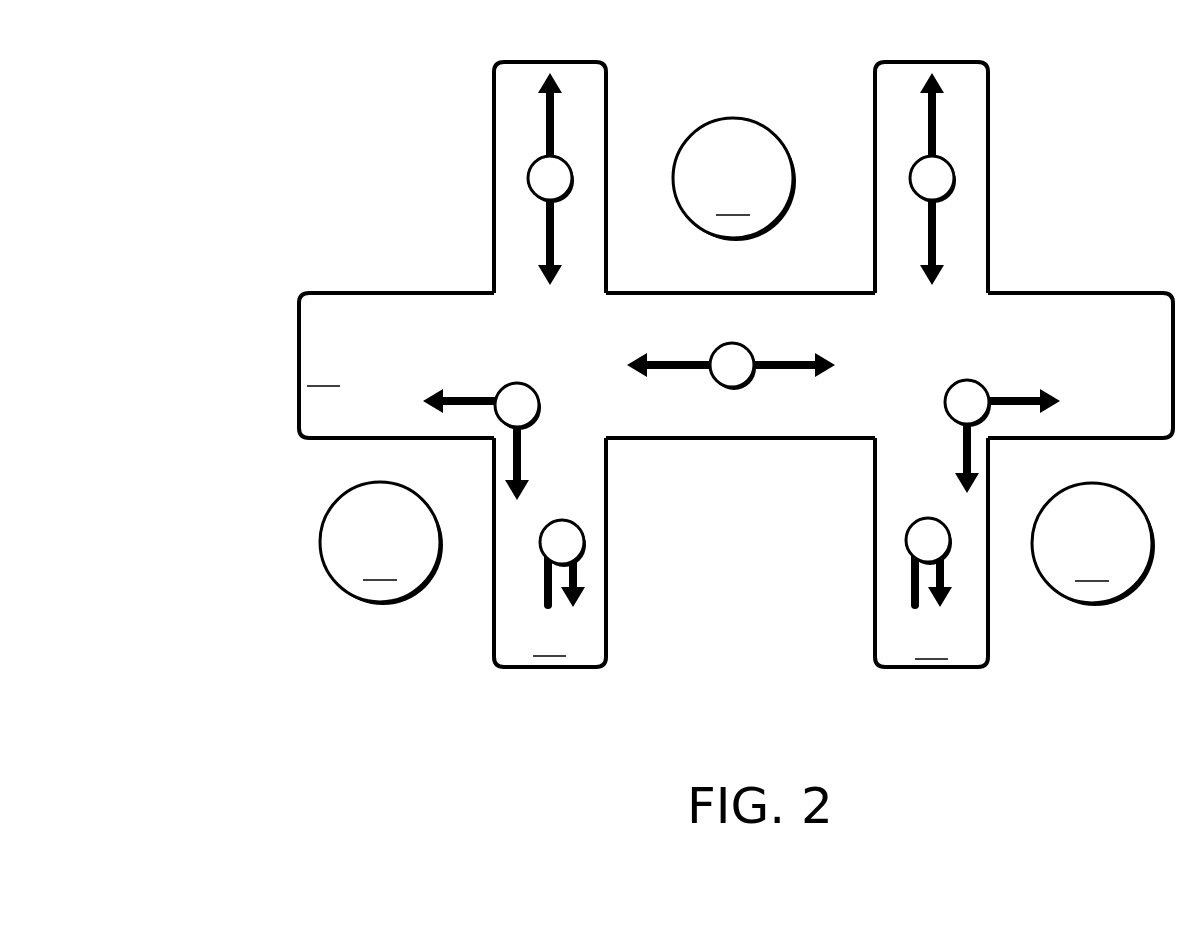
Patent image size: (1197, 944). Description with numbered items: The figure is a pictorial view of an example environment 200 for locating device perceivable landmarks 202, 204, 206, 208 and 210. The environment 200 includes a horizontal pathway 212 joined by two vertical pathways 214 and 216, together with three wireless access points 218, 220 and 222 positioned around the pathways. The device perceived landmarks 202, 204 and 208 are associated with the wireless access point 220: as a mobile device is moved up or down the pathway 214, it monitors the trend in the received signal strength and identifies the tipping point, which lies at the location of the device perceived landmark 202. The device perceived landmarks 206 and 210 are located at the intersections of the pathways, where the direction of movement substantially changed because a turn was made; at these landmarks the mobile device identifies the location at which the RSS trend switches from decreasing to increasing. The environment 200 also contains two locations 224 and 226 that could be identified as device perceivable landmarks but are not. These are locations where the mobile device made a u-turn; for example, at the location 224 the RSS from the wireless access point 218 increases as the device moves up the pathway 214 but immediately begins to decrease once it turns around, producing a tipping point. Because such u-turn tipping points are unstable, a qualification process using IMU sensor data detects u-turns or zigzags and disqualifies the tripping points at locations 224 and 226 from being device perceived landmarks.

The environment 200 is at (253, 56).
The device perceivable landmark 202 is at (532, 163).
The device perceivable landmark 204 is at (950, 164).
The device perceivable landmark 206 is at (515, 384).
The device perceivable landmark 208 is at (725, 344).
The device perceivable landmark 210 is at (951, 388).
The pathway 212 is at (736, 365).
The pathway 214 is at (550, 364).
The pathway 216 is at (931, 364).
The wireless access point 218 is at (381, 543).
The wireless access point 220 is at (734, 179).
The wireless access point 222 is at (1093, 544).
The location 224 is at (549, 523).
The location 226 is at (940, 520).